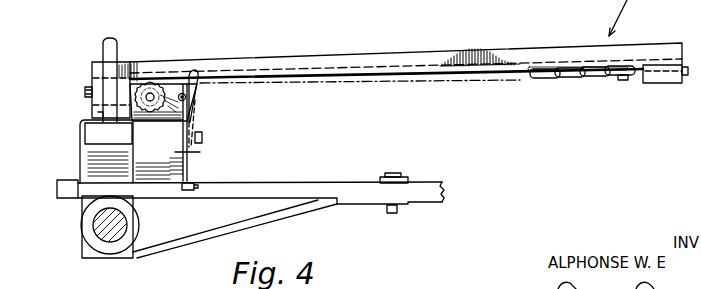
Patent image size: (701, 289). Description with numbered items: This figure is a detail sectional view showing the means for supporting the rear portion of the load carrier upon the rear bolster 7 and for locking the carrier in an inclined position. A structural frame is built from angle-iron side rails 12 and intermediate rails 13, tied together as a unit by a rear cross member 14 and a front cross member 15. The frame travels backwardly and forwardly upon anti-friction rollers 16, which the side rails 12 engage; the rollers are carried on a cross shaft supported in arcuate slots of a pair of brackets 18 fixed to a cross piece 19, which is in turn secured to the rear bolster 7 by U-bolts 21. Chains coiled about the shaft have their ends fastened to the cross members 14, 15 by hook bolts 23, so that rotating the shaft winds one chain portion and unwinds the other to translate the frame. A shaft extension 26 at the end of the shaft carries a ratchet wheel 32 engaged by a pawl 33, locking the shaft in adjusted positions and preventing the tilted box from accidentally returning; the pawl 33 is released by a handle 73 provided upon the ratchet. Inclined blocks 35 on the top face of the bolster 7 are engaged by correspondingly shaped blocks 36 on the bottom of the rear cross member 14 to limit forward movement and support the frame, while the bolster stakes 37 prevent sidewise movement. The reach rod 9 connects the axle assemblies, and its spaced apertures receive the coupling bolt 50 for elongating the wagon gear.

The rear bolster 7 is at (90, 153).
The reach rod 9 is at (442, 181).
The side rails 12 is at (422, 52).
The intermediate rails 13 is at (306, 80).
The cross member 14 is at (94, 85).
The cross member 15 is at (668, 83).
The anti-friction rollers 16 is at (150, 82).
The brackets 18 is at (196, 100).
The cross piece 19 is at (200, 152).
The U-bolts 21 is at (198, 122).
The hook bolts 23 is at (642, 78).
The shaft extension 26 is at (152, 93).
The ratchet wheel 32 is at (184, 72).
The pawl 33 is at (188, 118).
The inclined blocks 35 is at (98, 116).
The blocks 36 is at (100, 106).
The bolster stakes 37 is at (113, 37).
The coupling bolt 50 is at (393, 214).
The handle 73 is at (197, 70).